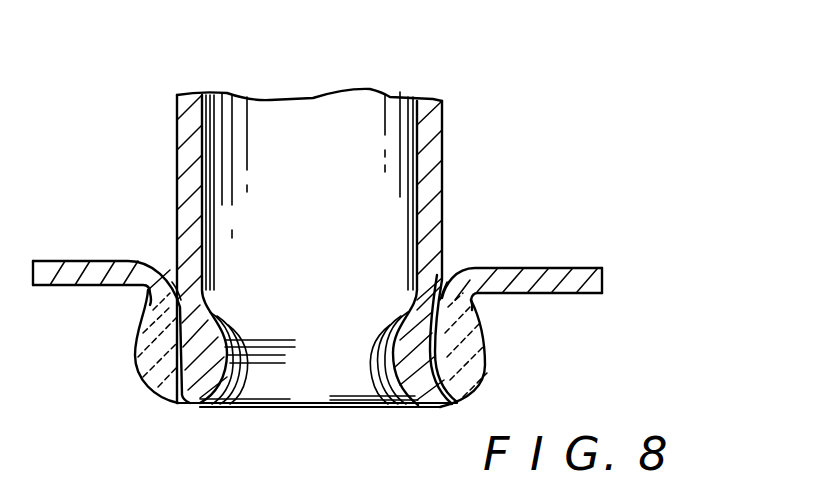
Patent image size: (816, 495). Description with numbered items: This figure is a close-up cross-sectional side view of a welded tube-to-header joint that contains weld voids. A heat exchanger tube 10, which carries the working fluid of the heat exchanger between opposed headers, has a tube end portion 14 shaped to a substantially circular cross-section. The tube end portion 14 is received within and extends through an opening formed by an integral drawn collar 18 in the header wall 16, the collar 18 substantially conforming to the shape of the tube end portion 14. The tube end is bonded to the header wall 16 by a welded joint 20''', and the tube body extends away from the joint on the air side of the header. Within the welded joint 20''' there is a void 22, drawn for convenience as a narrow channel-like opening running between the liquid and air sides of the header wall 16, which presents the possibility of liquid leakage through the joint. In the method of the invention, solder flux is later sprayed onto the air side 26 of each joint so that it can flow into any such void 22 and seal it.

The heat exchanger tube 10 is at (453, 106).
The tube end portion 14 is at (432, 152).
The header wall 16 is at (68, 270).
The collar 18 is at (150, 300).
The welded joint 20''' is at (317, 434).
The void 22 is at (167, 357).
The air side of the tube-to-header joint 26 is at (176, 283).